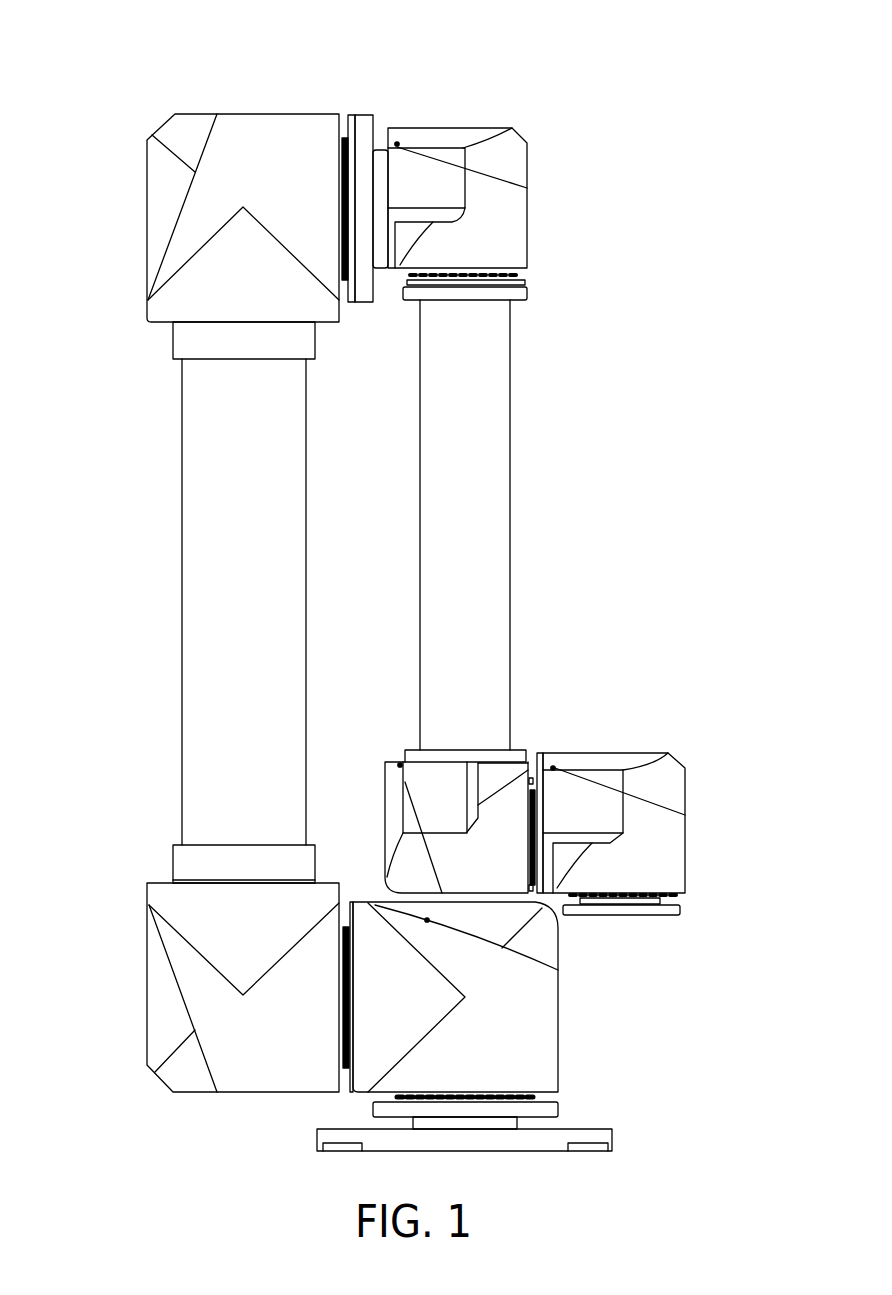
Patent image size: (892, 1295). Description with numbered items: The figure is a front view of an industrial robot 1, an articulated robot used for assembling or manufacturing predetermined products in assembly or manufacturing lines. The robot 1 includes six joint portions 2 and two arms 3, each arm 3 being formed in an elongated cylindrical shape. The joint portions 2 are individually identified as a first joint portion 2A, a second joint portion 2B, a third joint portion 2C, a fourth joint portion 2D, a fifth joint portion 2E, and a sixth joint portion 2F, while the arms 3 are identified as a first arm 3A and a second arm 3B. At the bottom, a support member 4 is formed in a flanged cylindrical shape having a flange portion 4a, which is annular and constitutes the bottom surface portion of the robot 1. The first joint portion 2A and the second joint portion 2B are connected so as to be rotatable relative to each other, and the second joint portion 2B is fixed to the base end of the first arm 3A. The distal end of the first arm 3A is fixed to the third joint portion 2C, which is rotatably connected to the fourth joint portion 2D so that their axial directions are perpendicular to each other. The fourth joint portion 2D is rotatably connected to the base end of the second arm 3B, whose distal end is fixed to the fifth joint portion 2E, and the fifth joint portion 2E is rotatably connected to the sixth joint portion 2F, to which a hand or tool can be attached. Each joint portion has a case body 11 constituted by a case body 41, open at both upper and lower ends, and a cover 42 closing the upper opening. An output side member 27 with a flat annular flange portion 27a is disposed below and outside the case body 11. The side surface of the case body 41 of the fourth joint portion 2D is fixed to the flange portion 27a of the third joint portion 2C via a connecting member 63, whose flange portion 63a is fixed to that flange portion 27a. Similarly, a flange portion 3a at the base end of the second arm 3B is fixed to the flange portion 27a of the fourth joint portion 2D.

The industrial robot 1 is at (652, 68).
The joint portion 2 is at (466, 585).
The first joint portion 2A is at (560, 997).
The second joint portion 2B is at (197, 1092).
The third joint portion 2C is at (193, 114).
The fourth joint portion 2D is at (528, 163).
The fifth joint portion 2E is at (395, 752).
The sixth joint portion 2F is at (686, 840).
The arm 3 is at (346, 591).
The first arm 3A is at (182, 598).
The second arm 3B is at (512, 523).
The flange portion 3a is at (527, 296).
The support member 4 is at (508, 1143).
The flange portion 4a is at (612, 1140).
The case body 11 is at (466, 585).
The case body 41 is at (466, 585).
The output side member 27 is at (541, 586).
The flange portion 27a is at (350, 114).
The cover 42 is at (487, 128).
The connecting member 63 is at (396, 159).
The flange portion 63a is at (360, 113).